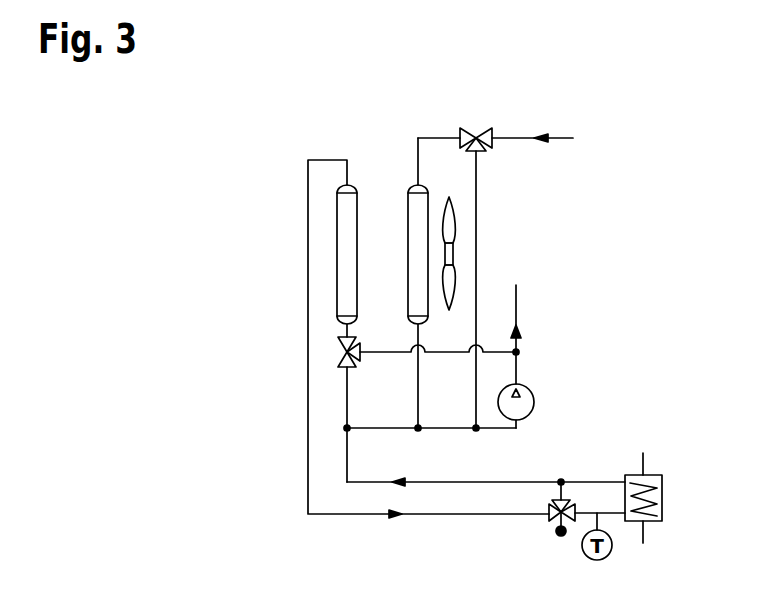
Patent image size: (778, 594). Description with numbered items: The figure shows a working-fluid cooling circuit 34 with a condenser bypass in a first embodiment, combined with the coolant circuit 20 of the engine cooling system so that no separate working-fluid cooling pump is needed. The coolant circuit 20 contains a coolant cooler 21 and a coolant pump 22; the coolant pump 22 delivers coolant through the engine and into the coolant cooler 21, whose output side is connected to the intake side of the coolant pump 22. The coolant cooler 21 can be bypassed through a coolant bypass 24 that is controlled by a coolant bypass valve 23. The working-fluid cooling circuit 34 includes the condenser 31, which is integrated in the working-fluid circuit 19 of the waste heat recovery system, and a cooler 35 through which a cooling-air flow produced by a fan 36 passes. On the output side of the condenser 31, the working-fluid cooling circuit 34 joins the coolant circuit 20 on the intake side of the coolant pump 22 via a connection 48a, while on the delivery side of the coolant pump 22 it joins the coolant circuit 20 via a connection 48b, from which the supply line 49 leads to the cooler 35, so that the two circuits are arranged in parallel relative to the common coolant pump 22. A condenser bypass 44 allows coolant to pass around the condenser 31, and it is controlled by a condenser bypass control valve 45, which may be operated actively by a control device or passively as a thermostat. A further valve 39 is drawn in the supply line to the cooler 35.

The working-fluid circuit 19 is at (643, 532).
The coolant circuit 20 is at (553, 135).
The coolant cooler 21 is at (410, 218).
The coolant pump 22 is at (523, 400).
The coolant bypass valve 23 is at (476, 128).
The coolant bypass 24 is at (477, 218).
The condenser 31 is at (662, 495).
The working-fluid cooling circuit 34 is at (358, 517).
The cooler 35 is at (356, 215).
The fan 36 is at (455, 252).
The three-way valve 39 is at (340, 363).
The condenser bypass 44 is at (553, 487).
The condenser bypass control valve 45 is at (556, 536).
The connection 48a is at (418, 428).
The connection 48b is at (516, 352).
The supply line 49 is at (378, 350).